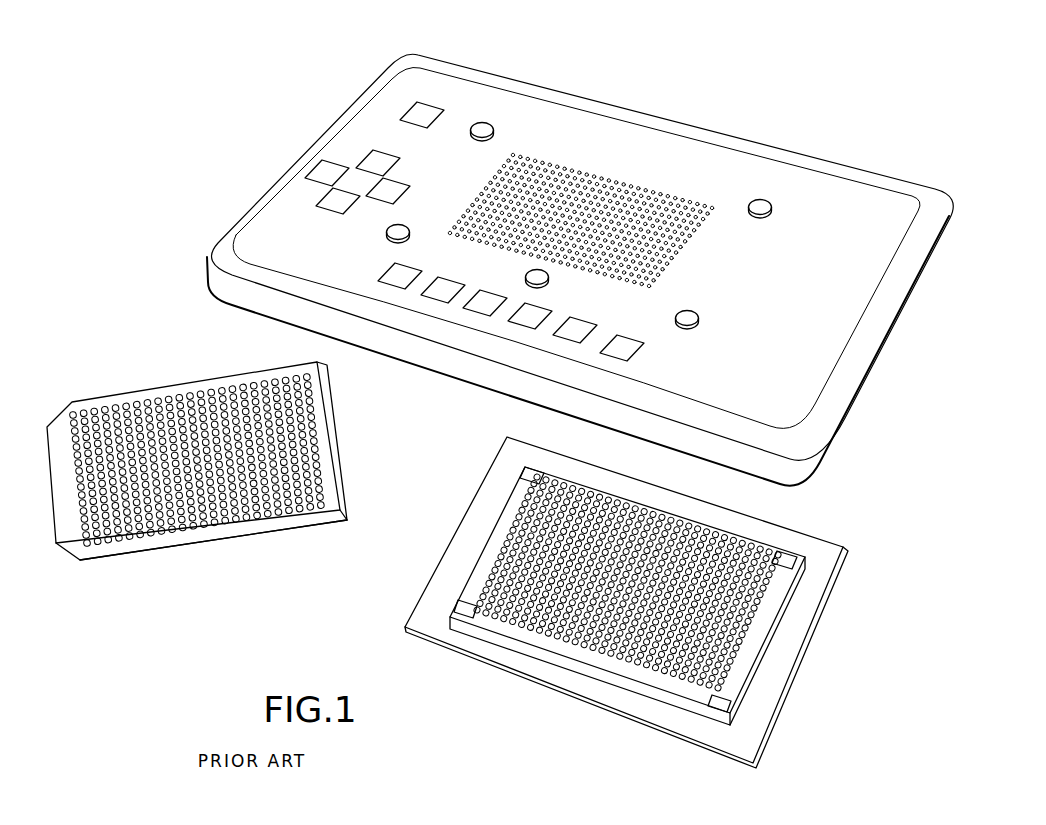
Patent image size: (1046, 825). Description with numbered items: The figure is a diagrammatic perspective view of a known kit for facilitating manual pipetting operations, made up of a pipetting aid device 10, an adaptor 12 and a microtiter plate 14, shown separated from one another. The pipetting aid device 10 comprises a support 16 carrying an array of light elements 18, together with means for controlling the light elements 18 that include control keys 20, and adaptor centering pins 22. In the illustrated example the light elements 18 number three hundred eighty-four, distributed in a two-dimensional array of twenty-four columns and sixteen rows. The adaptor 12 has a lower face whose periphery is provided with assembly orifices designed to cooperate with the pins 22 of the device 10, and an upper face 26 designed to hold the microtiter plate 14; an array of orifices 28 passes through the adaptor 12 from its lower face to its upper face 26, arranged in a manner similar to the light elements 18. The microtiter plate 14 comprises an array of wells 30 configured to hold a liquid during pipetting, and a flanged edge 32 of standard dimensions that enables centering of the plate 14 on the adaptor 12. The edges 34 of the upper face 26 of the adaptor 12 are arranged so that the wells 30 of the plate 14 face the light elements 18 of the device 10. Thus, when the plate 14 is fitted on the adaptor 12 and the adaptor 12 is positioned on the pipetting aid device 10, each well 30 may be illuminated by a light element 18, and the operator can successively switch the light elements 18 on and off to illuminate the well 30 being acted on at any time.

The pipetting aid device 10 is at (618, 98).
The adaptor 12 is at (820, 632).
The microtiter plate 14 is at (118, 388).
The support 16 is at (475, 92).
The light elements 18 is at (685, 203).
The control keys 20 is at (372, 157).
The adaptor centering pins 22 is at (693, 322).
The upper face 26 is at (517, 630).
The array of orifices 28 is at (577, 648).
The wells 30 is at (167, 530).
The flanged edge 32 is at (268, 530).
The edges 34 is at (733, 657).